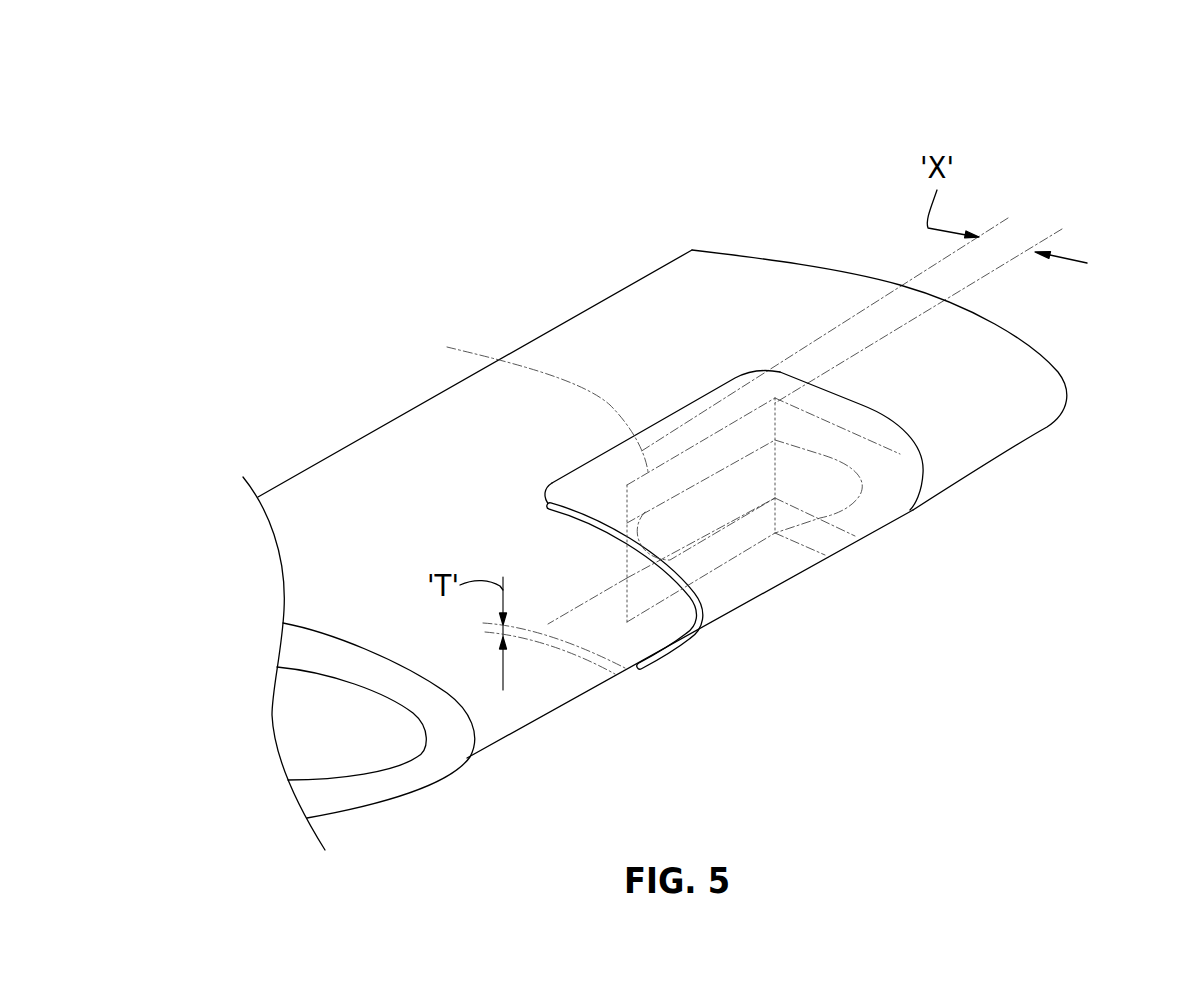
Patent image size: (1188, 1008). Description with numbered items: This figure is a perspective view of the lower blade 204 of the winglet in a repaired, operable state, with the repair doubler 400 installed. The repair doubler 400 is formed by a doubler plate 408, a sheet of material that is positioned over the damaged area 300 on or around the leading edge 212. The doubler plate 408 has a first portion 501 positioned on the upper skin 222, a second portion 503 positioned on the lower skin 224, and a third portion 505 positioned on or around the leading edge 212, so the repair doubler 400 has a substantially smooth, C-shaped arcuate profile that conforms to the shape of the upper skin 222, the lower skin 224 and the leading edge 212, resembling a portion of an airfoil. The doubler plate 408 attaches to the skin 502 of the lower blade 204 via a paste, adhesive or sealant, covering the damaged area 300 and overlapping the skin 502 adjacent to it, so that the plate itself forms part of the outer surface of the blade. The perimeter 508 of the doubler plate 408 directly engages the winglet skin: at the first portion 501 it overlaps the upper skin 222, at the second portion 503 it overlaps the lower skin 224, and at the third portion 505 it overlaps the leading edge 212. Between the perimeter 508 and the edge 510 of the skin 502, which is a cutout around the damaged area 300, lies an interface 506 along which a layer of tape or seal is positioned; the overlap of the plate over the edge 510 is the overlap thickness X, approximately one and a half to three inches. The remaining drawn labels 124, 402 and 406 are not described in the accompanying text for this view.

The electronic device 124 is at (611, 113).
The lower blade 204 is at (386, 207).
The leading edge 212 is at (533, 722).
The upper skin 222 is at (1033, 375).
The lower skin 224 is at (390, 800).
The damaged area 300 is at (855, 548).
The repair doubler 400 is at (945, 442).
The edge portion 402 is at (915, 508).
The surface portion 406 is at (963, 455).
The doubler plate 408 is at (590, 486).
The first portion 501 is at (893, 425).
The skin 502 is at (701, 257).
The second portion 503 is at (600, 660).
The third portion 505 is at (703, 604).
The interface 506 is at (712, 467).
The perimeter 508 is at (723, 385).
The edge 510 is at (520, 399).